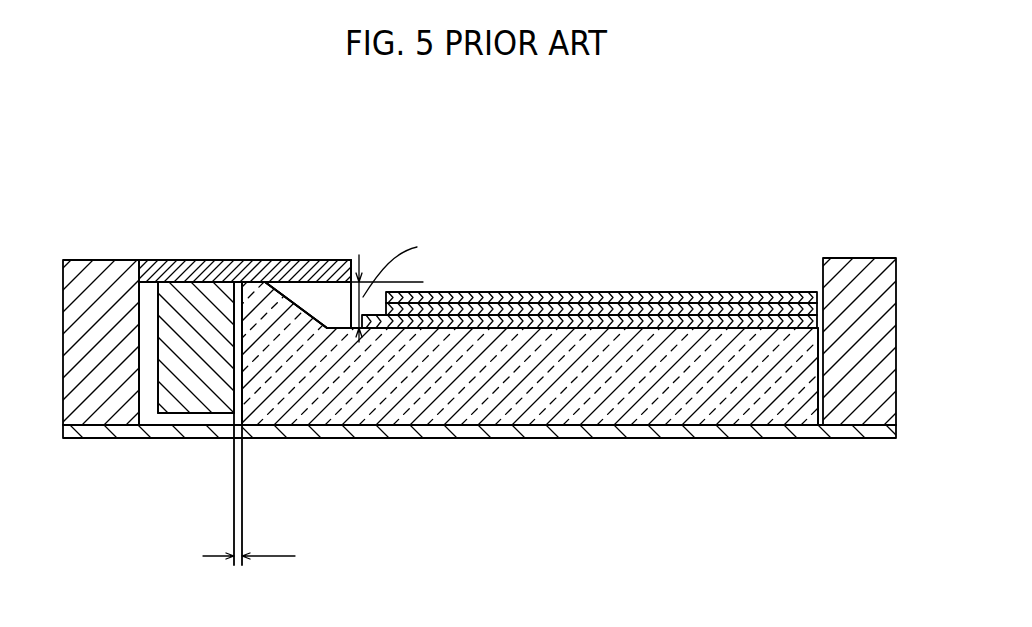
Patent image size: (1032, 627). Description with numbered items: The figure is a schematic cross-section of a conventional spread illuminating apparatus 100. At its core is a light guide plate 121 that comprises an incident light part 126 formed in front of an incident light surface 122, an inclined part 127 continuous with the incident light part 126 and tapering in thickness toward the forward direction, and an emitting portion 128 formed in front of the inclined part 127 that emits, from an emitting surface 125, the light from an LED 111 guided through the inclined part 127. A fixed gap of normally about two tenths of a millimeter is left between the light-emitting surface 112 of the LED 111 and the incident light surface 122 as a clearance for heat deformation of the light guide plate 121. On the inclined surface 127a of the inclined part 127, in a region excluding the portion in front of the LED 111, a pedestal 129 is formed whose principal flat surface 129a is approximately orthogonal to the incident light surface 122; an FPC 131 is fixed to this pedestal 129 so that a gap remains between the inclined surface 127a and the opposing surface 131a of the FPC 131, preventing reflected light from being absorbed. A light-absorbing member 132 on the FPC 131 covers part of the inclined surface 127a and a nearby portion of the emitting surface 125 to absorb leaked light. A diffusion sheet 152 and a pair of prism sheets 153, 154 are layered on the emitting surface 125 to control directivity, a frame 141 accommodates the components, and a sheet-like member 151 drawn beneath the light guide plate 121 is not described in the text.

The spread illuminating apparatus 100 is at (745, 192).
The LED 111 is at (188, 382).
The light-emitting surface 112 is at (240, 393).
The light guide plate 121 is at (524, 384).
The incident light surface 122 is at (235, 383).
The emitting surface 125 is at (589, 276).
The incident light part 126 is at (260, 373).
The inclined part 127 is at (310, 372).
The inclined surface 127a is at (332, 293).
The emitting portion 128 is at (584, 427).
The pedestal 129 is at (352, 285).
The principal flat surface 129a is at (347, 260).
The FPC 131 is at (165, 260).
The surface of the FPC 131a is at (187, 287).
The light-absorbing member 132 is at (293, 260).
The frame 141 is at (97, 267).
The base plate 151 is at (588, 432).
The diffusion sheet 152 is at (770, 320).
The prism sheet 153 is at (687, 305).
The prism sheet 154 is at (605, 292).